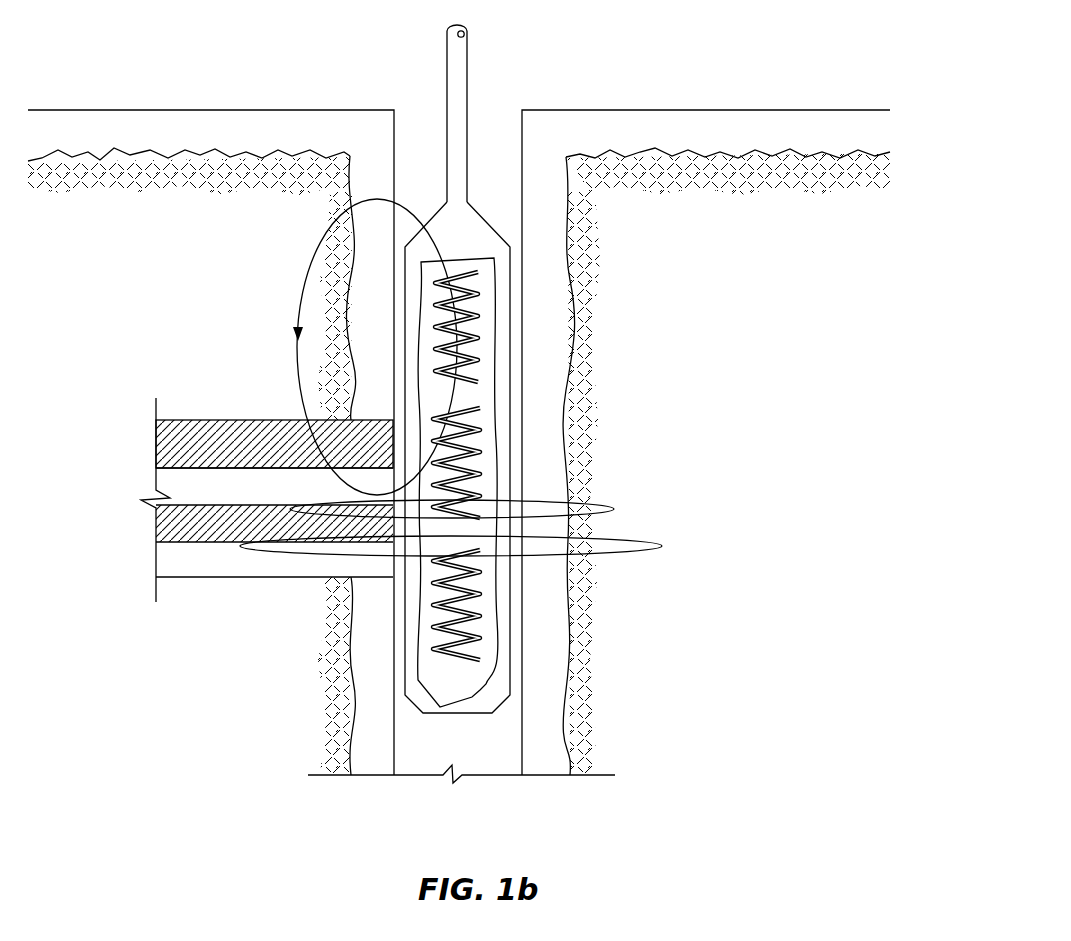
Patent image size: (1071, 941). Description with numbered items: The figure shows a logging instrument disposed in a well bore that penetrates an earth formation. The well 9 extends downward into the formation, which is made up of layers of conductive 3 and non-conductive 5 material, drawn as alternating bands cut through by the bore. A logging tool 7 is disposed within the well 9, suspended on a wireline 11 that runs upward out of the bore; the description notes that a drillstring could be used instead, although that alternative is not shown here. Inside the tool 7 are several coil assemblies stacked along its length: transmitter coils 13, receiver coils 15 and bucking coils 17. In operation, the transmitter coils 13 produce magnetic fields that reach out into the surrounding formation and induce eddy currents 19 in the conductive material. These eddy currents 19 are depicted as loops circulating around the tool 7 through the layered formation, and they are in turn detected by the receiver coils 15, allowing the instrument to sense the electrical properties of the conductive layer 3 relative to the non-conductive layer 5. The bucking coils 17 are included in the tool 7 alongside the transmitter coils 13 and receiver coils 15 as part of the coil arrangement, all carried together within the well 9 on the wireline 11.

The conductive material layer 3 is at (167, 441).
The non-conductive material layer 5 is at (170, 556).
The logging tool 7 is at (415, 630).
The well 9 is at (408, 93).
The wireline 11 is at (469, 63).
The transmitter coils 13 is at (475, 342).
The receiver coils 15 is at (468, 436).
The bucking coils 17 is at (480, 614).
The eddy currents 19 is at (654, 540).